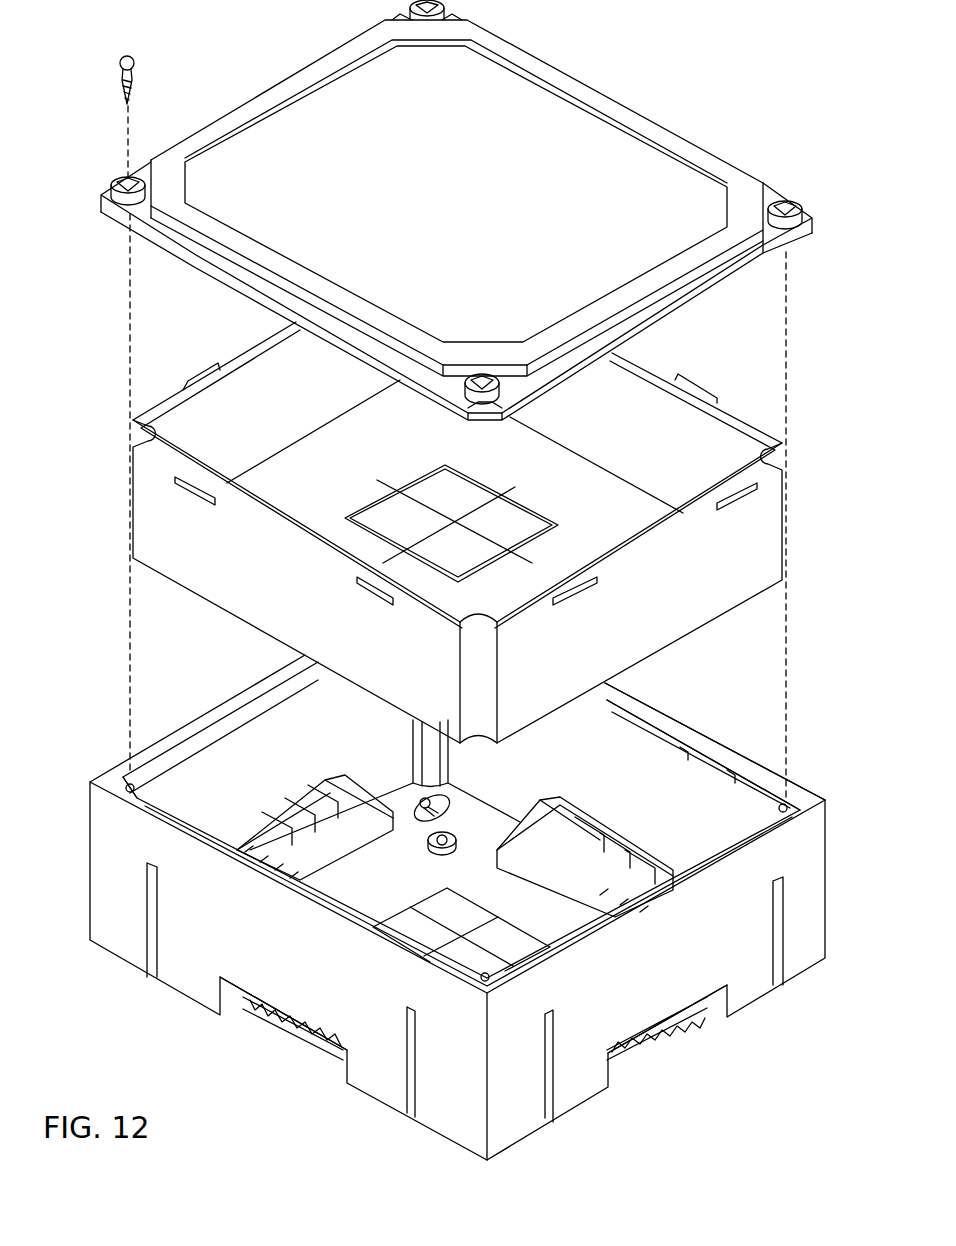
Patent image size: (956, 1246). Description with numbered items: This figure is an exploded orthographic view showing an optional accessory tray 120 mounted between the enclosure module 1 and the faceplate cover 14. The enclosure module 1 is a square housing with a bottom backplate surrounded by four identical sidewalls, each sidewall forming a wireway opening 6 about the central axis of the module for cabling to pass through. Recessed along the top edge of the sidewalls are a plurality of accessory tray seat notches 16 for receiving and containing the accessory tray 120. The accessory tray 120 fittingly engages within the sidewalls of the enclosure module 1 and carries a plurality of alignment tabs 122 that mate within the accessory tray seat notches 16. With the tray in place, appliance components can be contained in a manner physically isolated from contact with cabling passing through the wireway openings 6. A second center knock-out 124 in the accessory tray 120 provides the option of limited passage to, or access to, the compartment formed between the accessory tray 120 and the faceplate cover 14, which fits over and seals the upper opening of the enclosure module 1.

The enclosure module 1 is at (130, 937).
The wireway opening 6 is at (301, 1036).
The faceplate cover 14 is at (572, 142).
The accessory tray seat notches 16 is at (688, 752).
The accessory tray 120 is at (228, 578).
The alignment tabs 122 is at (703, 400).
The second center knock-out 124 is at (493, 520).